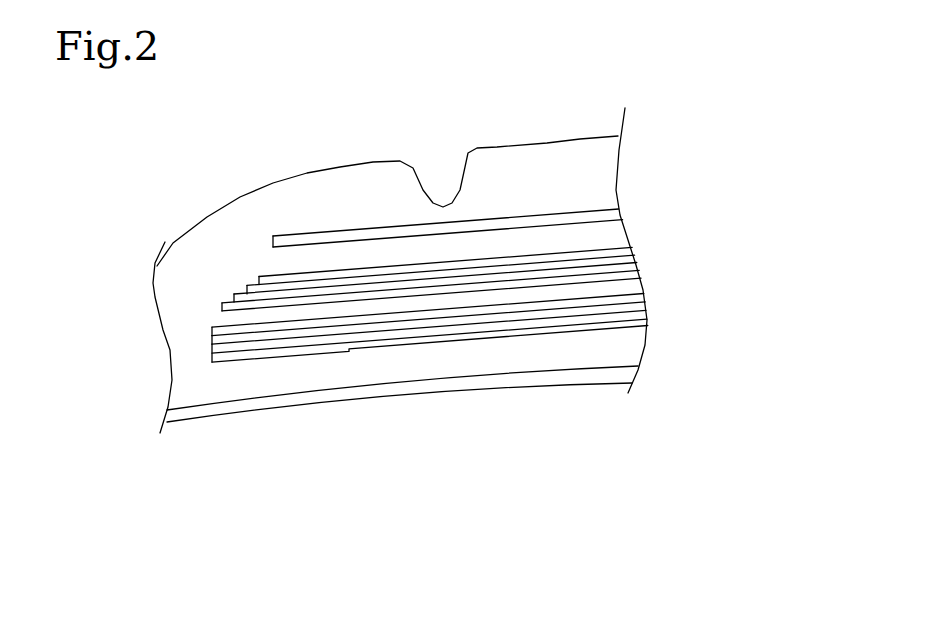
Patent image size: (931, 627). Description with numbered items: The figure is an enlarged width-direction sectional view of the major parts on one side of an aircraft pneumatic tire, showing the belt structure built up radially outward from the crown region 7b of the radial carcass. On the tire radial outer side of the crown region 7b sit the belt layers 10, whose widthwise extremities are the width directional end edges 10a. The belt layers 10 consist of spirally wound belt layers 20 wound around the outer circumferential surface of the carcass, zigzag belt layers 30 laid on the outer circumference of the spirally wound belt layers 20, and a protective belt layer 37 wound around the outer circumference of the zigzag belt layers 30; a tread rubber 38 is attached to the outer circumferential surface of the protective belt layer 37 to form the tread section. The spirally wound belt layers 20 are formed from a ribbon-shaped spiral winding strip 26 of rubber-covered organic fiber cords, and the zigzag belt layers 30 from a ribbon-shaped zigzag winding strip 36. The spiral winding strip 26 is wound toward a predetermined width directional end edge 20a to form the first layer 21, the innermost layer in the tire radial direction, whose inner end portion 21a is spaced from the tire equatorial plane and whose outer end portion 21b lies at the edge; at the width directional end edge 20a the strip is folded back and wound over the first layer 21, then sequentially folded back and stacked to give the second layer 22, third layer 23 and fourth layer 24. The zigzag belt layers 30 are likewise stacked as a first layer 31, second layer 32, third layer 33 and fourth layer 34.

The belt layers 10 is at (764, 122).
The width directional end edge 10a is at (211, 338).
The spirally wound belt layers 20 is at (484, 336).
The width directional end edge 20a is at (211, 353).
The first layer 21 is at (278, 357).
The inner end portion 21a is at (349, 350).
The outer end portion 21b is at (210, 362).
The second layer 22 is at (456, 348).
The third layer 23 is at (647, 313).
The fourth layer 24 is at (644, 300).
The spiral winding strip 26 is at (590, 342).
The zigzag belt layers 30 is at (489, 241).
The first layer 31 is at (461, 286).
The second layer 32 is at (638, 266).
The third layer 33 is at (636, 256).
The fourth layer 34 is at (632, 243).
The zigzag winding strip 36 is at (336, 273).
The protective belt layer 37 is at (622, 213).
The tread rubber 38 is at (550, 153).
The crown region 7b is at (513, 365).